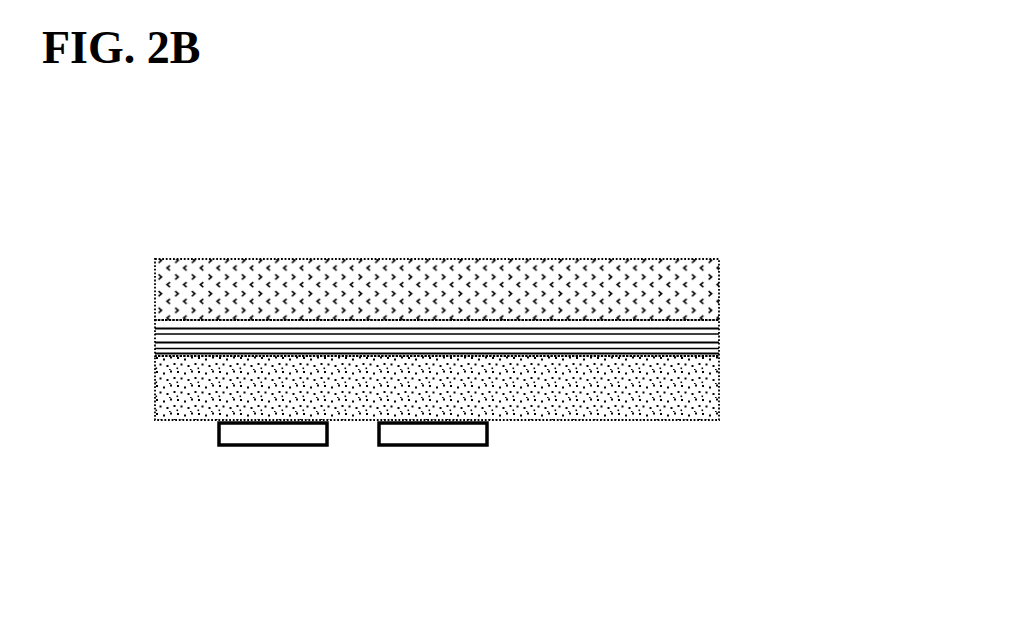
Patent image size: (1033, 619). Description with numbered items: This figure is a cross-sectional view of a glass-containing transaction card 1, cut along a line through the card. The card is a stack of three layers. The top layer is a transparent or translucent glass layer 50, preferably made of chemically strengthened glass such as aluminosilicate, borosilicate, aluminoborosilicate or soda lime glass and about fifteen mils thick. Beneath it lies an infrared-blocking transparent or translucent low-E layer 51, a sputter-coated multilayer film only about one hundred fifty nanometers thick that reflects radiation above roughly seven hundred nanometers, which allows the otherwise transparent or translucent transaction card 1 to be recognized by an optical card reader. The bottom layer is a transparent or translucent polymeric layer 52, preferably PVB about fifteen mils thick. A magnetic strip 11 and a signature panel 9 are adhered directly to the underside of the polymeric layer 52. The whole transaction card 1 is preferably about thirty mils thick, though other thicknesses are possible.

The transaction card 1 is at (465, 232).
The glass layer 50 is at (722, 285).
The low-E layer 51 is at (720, 335).
The polymeric layer 52 is at (720, 389).
The magnetic strip 11 is at (278, 445).
The signature panel 9 is at (433, 445).